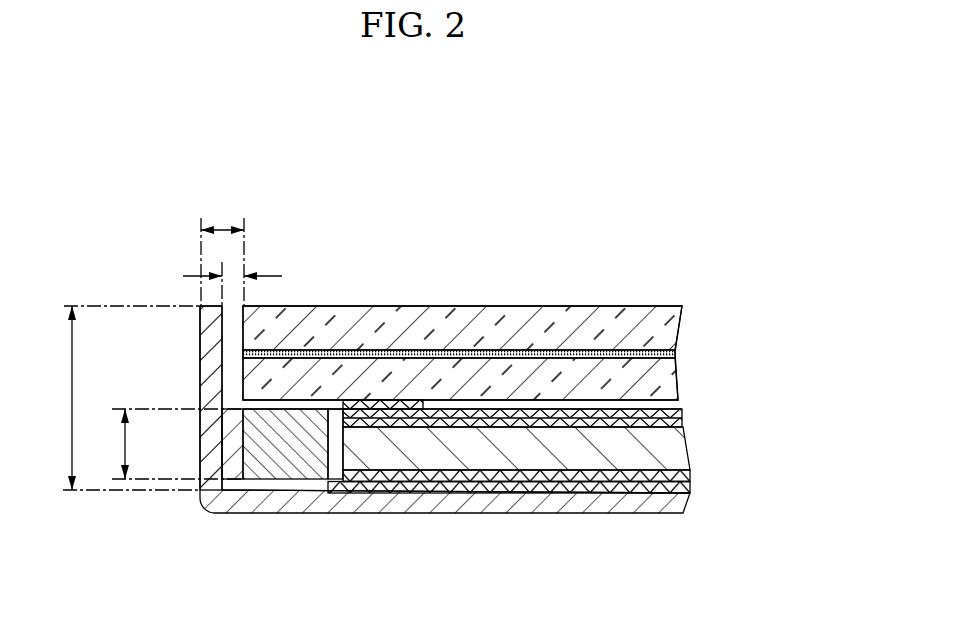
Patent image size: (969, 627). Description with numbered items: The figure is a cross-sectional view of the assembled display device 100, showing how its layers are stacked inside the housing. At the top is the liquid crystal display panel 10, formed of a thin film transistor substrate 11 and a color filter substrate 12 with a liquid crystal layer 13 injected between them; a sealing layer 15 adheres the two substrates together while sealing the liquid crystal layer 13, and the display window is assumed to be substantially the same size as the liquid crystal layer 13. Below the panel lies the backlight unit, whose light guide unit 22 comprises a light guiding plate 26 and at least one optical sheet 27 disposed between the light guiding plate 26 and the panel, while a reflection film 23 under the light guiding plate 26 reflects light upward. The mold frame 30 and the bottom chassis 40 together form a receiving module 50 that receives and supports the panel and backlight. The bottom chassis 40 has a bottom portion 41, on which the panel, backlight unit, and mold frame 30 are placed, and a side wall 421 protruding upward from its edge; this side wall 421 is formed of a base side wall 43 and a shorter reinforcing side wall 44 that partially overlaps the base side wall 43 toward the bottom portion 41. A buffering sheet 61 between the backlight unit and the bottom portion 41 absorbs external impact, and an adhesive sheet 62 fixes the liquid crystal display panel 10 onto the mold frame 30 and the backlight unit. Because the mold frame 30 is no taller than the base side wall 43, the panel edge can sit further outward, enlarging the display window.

The display device 100 is at (434, 167).
The liquid crystal display panel 10 is at (647, 292).
The thin film transistor substrate 11 is at (662, 380).
The color filter substrate 12 is at (663, 328).
The liquid crystal layer 13 is at (548, 352).
The sealing layer 15 is at (303, 353).
The light guide unit 22 is at (735, 407).
The reflection film 23 is at (682, 477).
The light guiding plate 26 is at (675, 448).
The optical sheet 27 is at (675, 412).
The mold frame 30 is at (280, 479).
The bottom chassis 40 is at (200, 518).
The bottom portion 41 is at (442, 507).
The base side wall 43 is at (207, 348).
The reinforcing side wall 44 is at (228, 437).
The side wall 421 is at (108, 212).
The receiving module 50 is at (293, 558).
The buffering sheet 61 is at (543, 487).
The adhesive sheet 62 is at (370, 404).